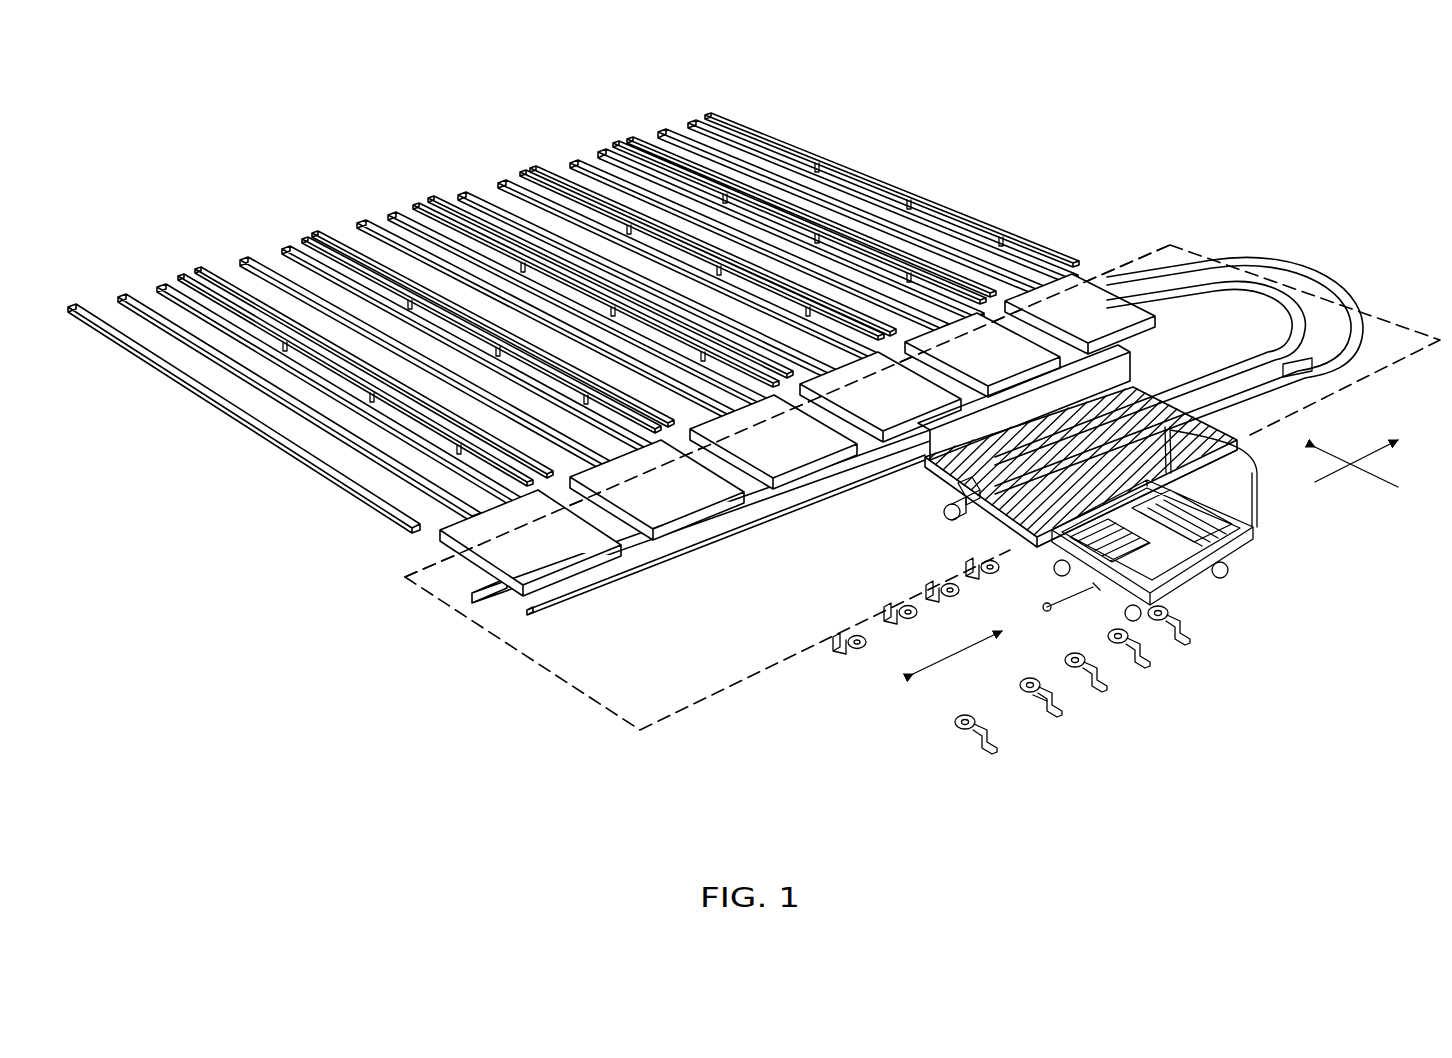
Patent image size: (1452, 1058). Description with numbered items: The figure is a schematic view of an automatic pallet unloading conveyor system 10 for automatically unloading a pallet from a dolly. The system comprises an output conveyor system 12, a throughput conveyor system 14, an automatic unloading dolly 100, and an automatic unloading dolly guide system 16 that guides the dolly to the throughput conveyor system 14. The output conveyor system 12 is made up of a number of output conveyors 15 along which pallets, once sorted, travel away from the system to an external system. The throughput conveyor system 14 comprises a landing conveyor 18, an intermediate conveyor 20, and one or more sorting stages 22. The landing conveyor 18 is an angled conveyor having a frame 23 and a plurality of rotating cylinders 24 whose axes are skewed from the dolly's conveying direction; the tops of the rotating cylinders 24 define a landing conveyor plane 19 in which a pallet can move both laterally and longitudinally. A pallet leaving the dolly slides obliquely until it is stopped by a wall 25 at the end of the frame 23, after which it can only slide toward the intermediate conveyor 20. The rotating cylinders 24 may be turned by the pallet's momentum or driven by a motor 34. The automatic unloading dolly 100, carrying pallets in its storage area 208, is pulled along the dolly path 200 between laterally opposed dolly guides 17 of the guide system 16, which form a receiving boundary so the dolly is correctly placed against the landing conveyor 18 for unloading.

The automatic pallet unloading conveyor system 10 is at (1275, 128).
The output conveyor system 12 is at (913, 157).
The throughput conveyor system 14 is at (1282, 268).
The output conveyor 15 is at (158, 284).
The automatic unloading dolly guide system 16 is at (1028, 745).
The dolly guide 17 is at (838, 656).
The landing conveyor 18 is at (960, 490).
The landing conveyor plane 19 is at (1020, 460).
The intermediate conveyor 20 is at (1298, 320).
The sorting stage 22 is at (787, 420).
The frame 23 is at (1003, 527).
The rotating cylinders 24 is at (925, 470).
The wall 25 is at (1058, 396).
The motor 34 is at (944, 516).
The automatic unloading dolly 100 is at (1228, 607).
The dolly path 200 is at (968, 658).
The storage area 208 is at (1272, 549).